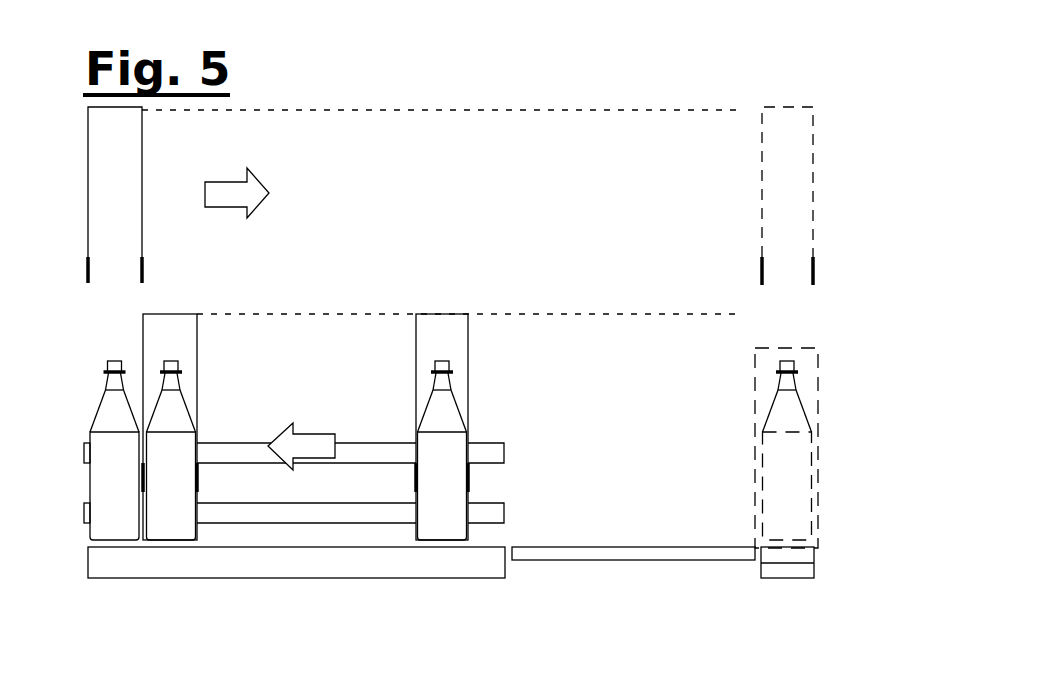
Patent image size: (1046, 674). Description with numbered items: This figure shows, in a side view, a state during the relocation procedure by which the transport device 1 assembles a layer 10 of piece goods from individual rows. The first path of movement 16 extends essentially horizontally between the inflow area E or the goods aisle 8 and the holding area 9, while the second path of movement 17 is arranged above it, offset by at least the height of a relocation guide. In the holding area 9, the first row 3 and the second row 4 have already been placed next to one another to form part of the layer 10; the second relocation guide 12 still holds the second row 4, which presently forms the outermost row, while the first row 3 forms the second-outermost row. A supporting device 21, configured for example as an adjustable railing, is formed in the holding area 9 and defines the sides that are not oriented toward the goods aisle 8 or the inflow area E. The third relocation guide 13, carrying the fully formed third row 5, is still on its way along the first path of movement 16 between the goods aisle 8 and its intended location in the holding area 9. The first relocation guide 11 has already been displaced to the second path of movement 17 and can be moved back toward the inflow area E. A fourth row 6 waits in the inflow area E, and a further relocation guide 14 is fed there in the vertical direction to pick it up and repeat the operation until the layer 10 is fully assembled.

The transport device 1 is at (503, 112).
The first row 3 is at (120, 516).
The second row 4 is at (165, 512).
The third row 5 is at (456, 497).
The fourth row 6 is at (800, 496).
The goods aisle 8 is at (795, 572).
The holding area 9 is at (158, 562).
The layer 10 is at (85, 323).
The first relocation guide 11 is at (88, 188).
The second relocation guide 12 is at (197, 334).
The third relocation guide 13 is at (468, 393).
The relocation guide 14 is at (815, 185).
The first path of movement 16 is at (530, 313).
The second path of movement 17 is at (514, 110).
The supporting device 21 is at (83, 508).
The inflow area E is at (820, 400).